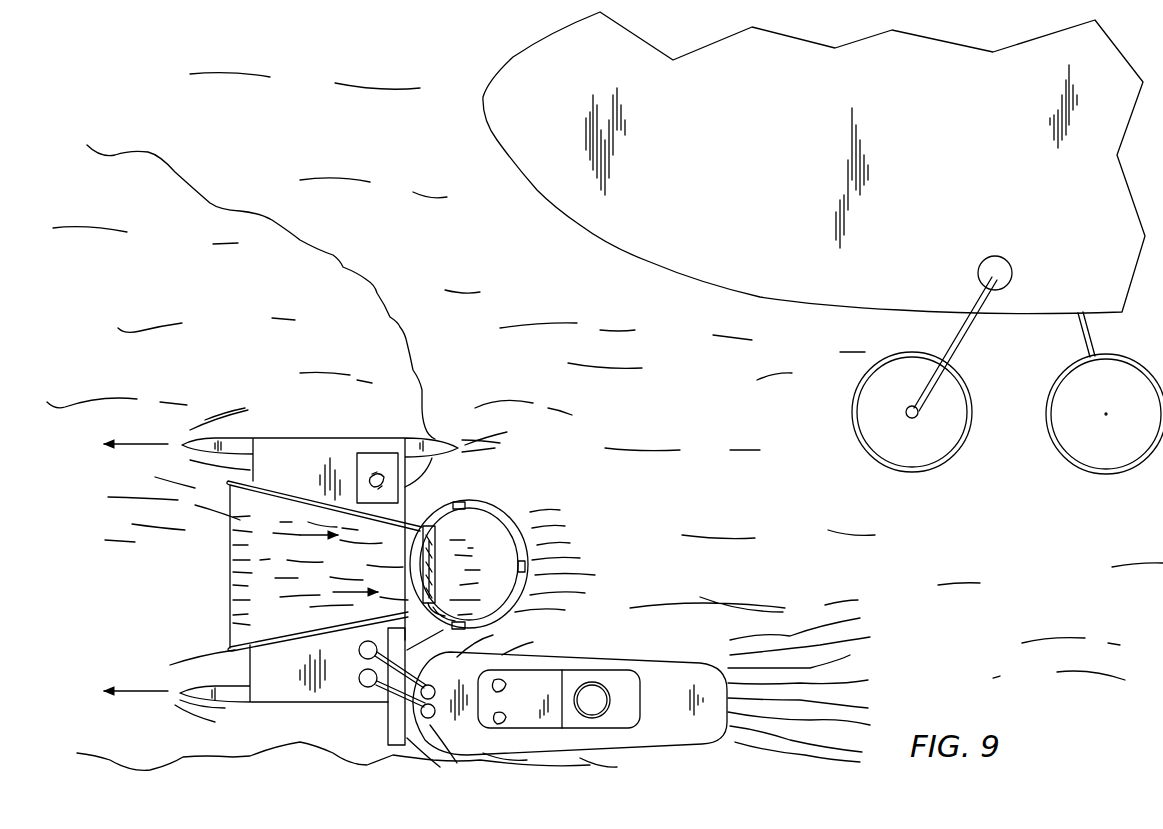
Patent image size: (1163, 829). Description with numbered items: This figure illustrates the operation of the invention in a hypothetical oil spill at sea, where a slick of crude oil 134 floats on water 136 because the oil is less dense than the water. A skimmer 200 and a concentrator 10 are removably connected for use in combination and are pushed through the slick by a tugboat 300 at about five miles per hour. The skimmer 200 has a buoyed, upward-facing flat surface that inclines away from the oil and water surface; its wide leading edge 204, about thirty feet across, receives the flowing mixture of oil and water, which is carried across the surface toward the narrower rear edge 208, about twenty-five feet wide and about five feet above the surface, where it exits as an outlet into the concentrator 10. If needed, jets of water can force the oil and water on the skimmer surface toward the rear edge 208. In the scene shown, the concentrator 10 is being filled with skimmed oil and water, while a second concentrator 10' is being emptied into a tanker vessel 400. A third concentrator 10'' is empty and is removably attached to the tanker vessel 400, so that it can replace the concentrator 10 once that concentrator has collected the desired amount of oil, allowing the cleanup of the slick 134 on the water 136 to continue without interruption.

The concentrator 10 is at (515, 564).
The concentrator 10' is at (921, 389).
The concentrator 10'' is at (1104, 415).
The oil 134 is at (233, 351).
The water 136 is at (928, 653).
The skimmer 200 is at (300, 648).
The leading edge 204 is at (230, 535).
The rear edge 208 is at (427, 546).
The tugboat 300 is at (619, 650).
The tanker vessel 400 is at (646, 269).